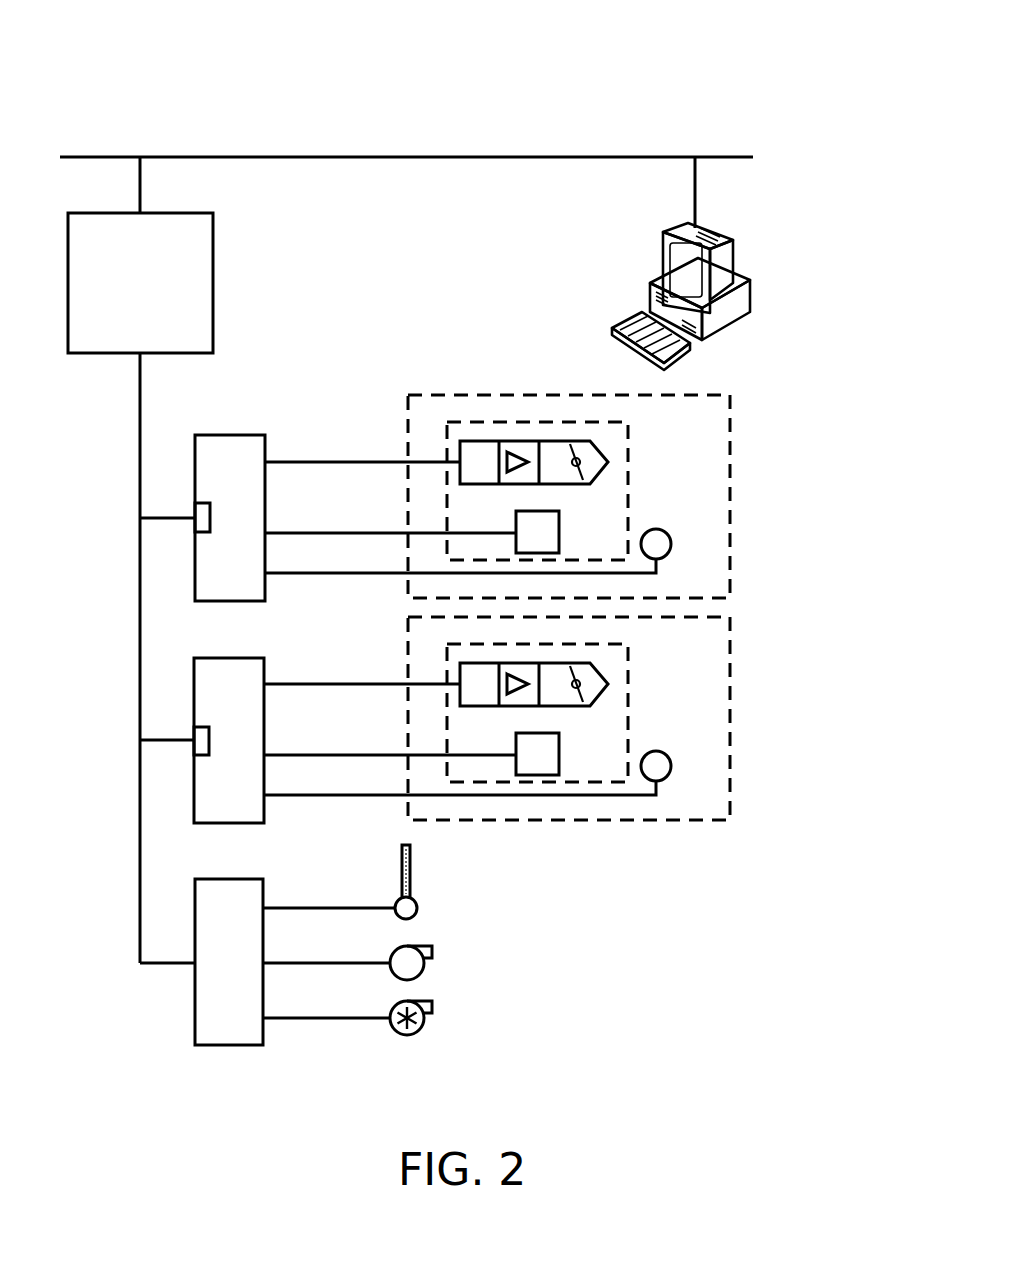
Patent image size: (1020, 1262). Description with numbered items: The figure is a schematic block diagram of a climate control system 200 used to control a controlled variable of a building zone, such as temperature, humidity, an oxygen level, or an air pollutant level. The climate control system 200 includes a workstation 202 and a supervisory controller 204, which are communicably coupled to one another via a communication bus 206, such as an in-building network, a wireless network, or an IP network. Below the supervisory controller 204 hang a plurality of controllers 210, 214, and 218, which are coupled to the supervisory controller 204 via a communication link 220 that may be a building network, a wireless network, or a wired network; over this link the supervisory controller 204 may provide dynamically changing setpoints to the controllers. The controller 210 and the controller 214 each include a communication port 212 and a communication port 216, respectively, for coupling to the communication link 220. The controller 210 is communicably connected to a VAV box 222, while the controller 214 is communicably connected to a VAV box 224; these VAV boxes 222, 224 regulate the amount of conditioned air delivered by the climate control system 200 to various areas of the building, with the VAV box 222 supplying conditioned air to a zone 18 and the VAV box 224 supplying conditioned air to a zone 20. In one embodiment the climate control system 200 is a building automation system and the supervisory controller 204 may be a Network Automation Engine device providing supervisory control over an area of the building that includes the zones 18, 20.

The climate control system 200 is at (404, 56).
The workstation 202 is at (713, 317).
The supervisory controller 204 is at (204, 237).
The communication bus 206 is at (433, 158).
The controller 210 is at (205, 442).
The communication port 212 is at (200, 512).
The controller 214 is at (204, 665).
The communication port 216 is at (199, 734).
The controller 218 is at (230, 887).
The communication link 220 is at (138, 797).
The VAV box 222 is at (626, 447).
The VAV box 224 is at (626, 669).
The zone 18 is at (713, 499).
The zone 20 is at (713, 735).